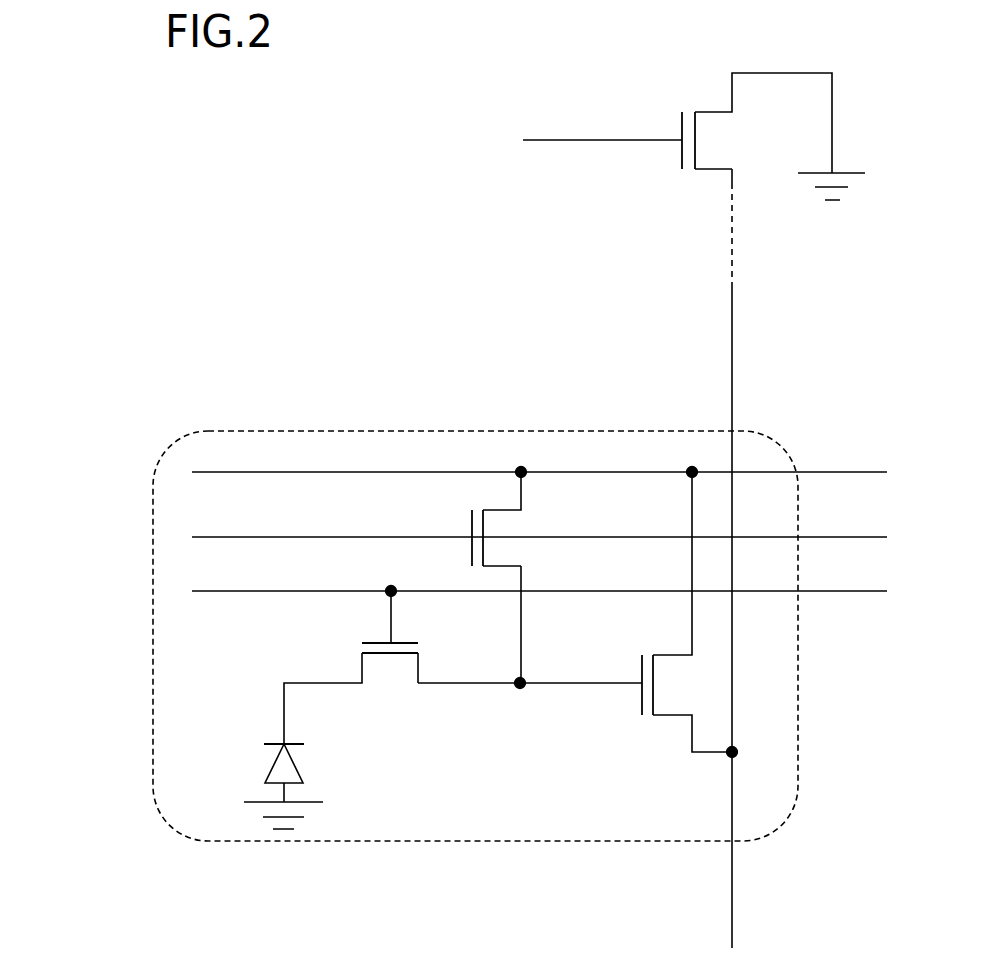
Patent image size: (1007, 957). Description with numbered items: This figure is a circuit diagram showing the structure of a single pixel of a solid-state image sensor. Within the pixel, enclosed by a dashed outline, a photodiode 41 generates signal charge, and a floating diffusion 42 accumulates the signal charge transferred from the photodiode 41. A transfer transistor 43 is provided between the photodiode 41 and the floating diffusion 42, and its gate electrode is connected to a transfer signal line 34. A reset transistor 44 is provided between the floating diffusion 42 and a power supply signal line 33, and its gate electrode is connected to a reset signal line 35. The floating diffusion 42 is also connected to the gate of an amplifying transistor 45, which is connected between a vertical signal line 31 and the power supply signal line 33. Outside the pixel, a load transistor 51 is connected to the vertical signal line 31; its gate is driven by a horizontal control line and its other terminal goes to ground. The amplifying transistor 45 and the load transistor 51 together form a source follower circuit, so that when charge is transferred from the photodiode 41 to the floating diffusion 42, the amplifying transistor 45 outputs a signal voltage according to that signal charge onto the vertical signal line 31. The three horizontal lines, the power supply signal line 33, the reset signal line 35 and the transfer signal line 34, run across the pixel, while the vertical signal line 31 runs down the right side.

The vertical signal line 31 is at (732, 902).
The power supply signal line 33 is at (193, 472).
The transfer signal line 34 is at (193, 591).
The reset signal line 35 is at (193, 537).
The photodiode 41 is at (268, 765).
The floating diffusion 42 is at (528, 692).
The transfer transistor 43 is at (362, 671).
The reset transistor 44 is at (483, 510).
The amplifying transistor 45 is at (690, 652).
The load transistor 51 is at (695, 170).